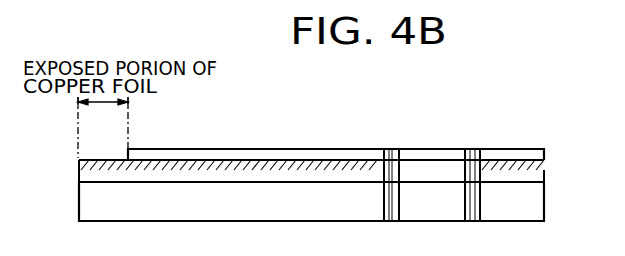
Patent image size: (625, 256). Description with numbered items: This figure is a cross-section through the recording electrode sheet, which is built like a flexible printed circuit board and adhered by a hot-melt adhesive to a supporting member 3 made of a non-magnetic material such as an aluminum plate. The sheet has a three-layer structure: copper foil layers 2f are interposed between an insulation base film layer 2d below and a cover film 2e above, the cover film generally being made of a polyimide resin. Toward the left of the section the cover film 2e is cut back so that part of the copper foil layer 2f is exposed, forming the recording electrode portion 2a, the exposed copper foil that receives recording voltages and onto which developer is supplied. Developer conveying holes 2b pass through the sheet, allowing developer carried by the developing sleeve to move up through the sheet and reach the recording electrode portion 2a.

The recording electrode portion 2a is at (105, 159).
The developer conveying hole 2b is at (441, 149).
The insulation base film layer 2d is at (544, 176).
The cover film 2e is at (540, 150).
The copper foil layer 2f is at (544, 168).
The supporting member 3 is at (540, 218).